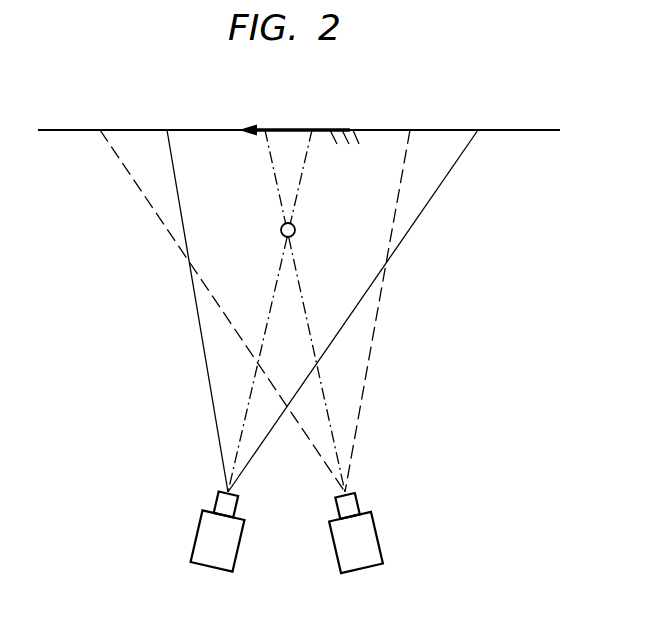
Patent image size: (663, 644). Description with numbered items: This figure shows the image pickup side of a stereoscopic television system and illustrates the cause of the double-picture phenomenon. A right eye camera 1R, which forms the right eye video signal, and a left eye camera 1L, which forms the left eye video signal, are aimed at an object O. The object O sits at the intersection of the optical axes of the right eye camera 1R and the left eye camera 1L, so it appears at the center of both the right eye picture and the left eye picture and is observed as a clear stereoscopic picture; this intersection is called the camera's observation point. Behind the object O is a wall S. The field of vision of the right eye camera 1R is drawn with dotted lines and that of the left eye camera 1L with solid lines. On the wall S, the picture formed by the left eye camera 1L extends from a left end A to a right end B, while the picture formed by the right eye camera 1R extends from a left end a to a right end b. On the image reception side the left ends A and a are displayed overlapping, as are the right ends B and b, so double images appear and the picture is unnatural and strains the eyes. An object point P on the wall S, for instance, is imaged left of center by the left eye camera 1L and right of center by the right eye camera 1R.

The left eye camera 1L is at (200, 537).
The right eye camera 1R is at (378, 535).
The wall S is at (527, 130).
The object point P is at (293, 130).
The object O is at (295, 235).
The left end of right eye camera picture a is at (218, 298).
The left end of left eye camera picture A is at (193, 298).
The right end of right eye camera picture b is at (380, 298).
The right end of left eye camera picture B is at (356, 298).